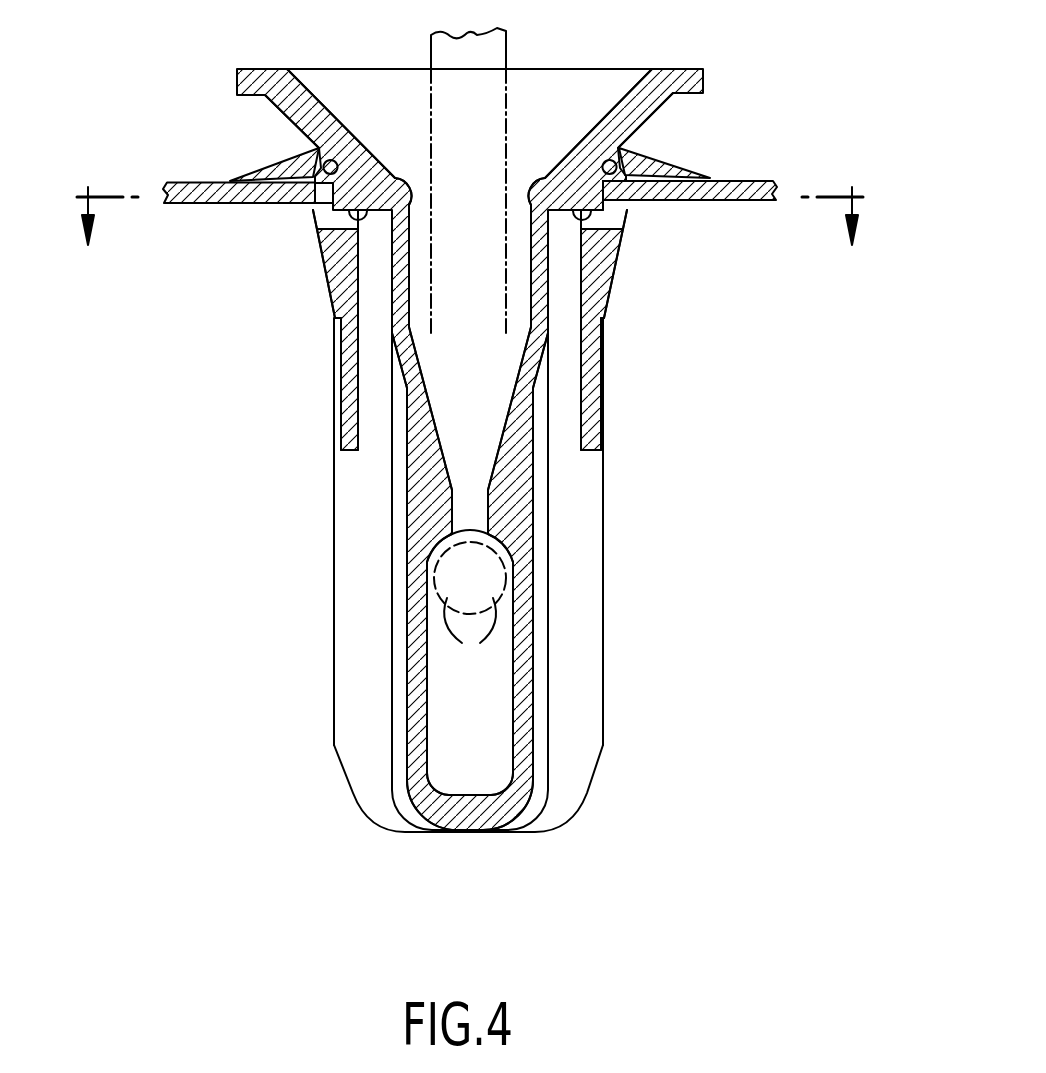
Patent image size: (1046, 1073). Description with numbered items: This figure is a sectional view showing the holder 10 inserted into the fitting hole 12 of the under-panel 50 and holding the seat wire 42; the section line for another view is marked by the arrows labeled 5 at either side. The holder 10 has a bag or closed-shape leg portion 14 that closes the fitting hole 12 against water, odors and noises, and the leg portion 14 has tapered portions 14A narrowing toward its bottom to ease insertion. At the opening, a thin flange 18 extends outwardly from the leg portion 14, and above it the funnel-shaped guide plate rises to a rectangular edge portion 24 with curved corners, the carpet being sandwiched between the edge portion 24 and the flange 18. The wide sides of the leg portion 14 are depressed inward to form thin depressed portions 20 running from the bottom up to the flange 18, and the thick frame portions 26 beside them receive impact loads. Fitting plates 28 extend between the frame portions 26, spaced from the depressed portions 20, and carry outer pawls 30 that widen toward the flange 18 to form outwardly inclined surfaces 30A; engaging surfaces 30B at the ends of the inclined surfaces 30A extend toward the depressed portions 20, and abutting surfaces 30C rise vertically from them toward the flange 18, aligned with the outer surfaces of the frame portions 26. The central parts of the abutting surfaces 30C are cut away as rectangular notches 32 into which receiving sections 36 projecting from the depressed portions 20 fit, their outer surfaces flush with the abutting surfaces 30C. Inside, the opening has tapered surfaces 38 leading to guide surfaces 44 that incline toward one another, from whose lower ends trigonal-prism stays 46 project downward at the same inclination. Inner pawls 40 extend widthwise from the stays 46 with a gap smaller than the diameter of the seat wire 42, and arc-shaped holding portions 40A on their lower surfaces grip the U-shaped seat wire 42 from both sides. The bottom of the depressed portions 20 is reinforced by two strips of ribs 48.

The section line 5- 5 is at (469, 243).
The holder 10 is at (532, 575).
The fitting hole 12 is at (600, 208).
The leg portion 14 is at (492, 575).
The tapered portions 14A is at (590, 792).
The flange 18 is at (687, 164).
The depressed portions 20 is at (409, 637).
The edge portion 24 is at (703, 80).
The frame portions 26 is at (333, 548).
The fitting plates 28 is at (339, 418).
The outer pawls 30 is at (337, 294).
The inclined surface 30A is at (322, 262).
The engaging surfaces 30B is at (313, 212).
The abutting surfaces 30C is at (330, 166).
The notches 32 is at (315, 228).
The receiving sections 36 is at (387, 213).
The tapered surfaces 38 is at (617, 107).
The inner pawls 40 is at (455, 497).
The holding portions 40A is at (470, 611).
The seat wire 42 is at (506, 52).
The guide surfaces 44 is at (513, 364).
The stays 46 is at (490, 445).
The ribs 48 is at (548, 693).
The under-panel 50 is at (192, 182).